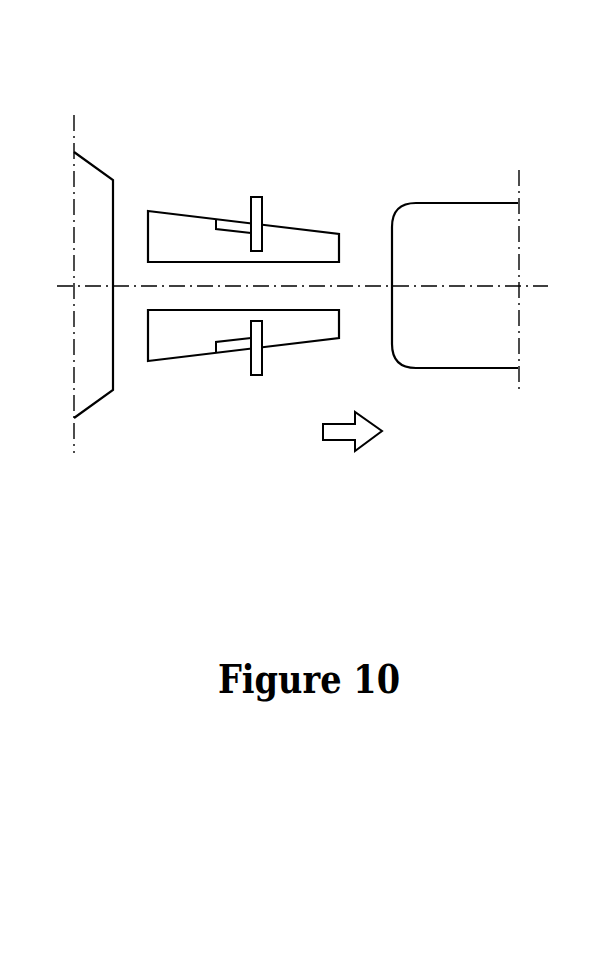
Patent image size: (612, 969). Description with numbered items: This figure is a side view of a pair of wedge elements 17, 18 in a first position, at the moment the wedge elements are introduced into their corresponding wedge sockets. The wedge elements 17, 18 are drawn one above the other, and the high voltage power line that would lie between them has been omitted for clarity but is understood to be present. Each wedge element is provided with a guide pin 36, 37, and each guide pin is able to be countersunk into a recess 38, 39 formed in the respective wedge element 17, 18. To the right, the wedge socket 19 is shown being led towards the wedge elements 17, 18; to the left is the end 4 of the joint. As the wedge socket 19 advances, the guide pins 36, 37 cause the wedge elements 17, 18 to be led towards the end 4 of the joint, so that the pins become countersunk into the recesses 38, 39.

The end of joint 4 is at (92, 162).
The wedge element 17 is at (167, 212).
The wedge element 18 is at (168, 361).
The wedge socket 19 is at (458, 203).
The guide pin 36 is at (263, 207).
The guide pin 37 is at (255, 375).
The recess 38 is at (238, 224).
The recess 39 is at (233, 347).